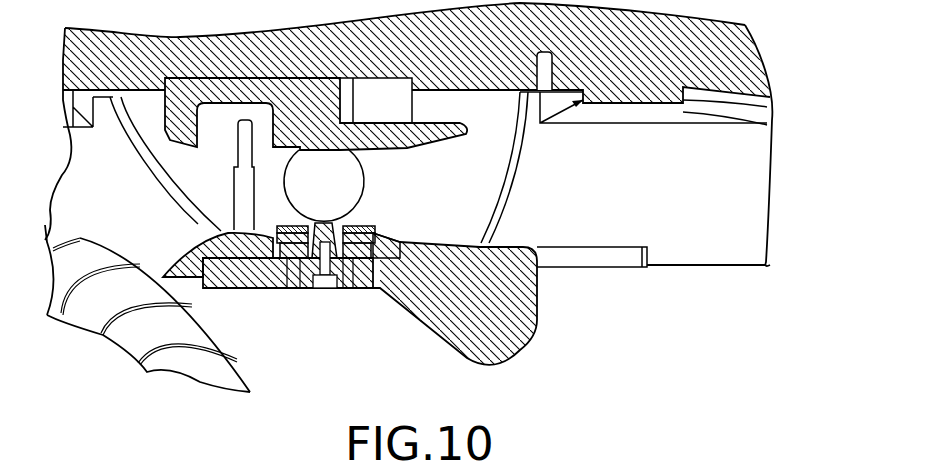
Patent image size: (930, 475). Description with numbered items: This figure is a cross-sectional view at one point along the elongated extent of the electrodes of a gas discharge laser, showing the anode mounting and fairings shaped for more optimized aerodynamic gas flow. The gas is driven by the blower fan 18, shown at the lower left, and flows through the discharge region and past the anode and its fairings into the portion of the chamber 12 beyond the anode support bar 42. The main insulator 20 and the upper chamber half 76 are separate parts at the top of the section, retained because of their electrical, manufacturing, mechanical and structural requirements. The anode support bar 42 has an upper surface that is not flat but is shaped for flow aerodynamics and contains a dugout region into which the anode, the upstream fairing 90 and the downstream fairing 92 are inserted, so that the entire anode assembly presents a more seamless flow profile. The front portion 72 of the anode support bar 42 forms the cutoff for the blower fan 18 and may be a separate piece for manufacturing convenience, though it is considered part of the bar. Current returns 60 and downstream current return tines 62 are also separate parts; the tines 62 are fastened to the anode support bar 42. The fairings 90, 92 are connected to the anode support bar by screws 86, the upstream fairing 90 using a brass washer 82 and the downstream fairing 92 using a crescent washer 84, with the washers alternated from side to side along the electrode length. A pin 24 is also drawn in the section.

The chamber 12 is at (395, 357).
The blower fan 18 is at (249, 362).
The main insulator 20 is at (168, 130).
The pin 24 is at (254, 190).
The anode support bar 42 is at (530, 318).
The current return 60 is at (152, 187).
The downstream current return tines 62 is at (513, 152).
The front portion of the anode support bar 72 is at (188, 279).
The upper chamber half 76 is at (628, 103).
The brass washer 82 is at (262, 232).
The crescent washer 84 is at (383, 236).
The screws 86 is at (371, 222).
The upstream fairing 90 is at (205, 231).
The downstream fairing 92 is at (482, 247).